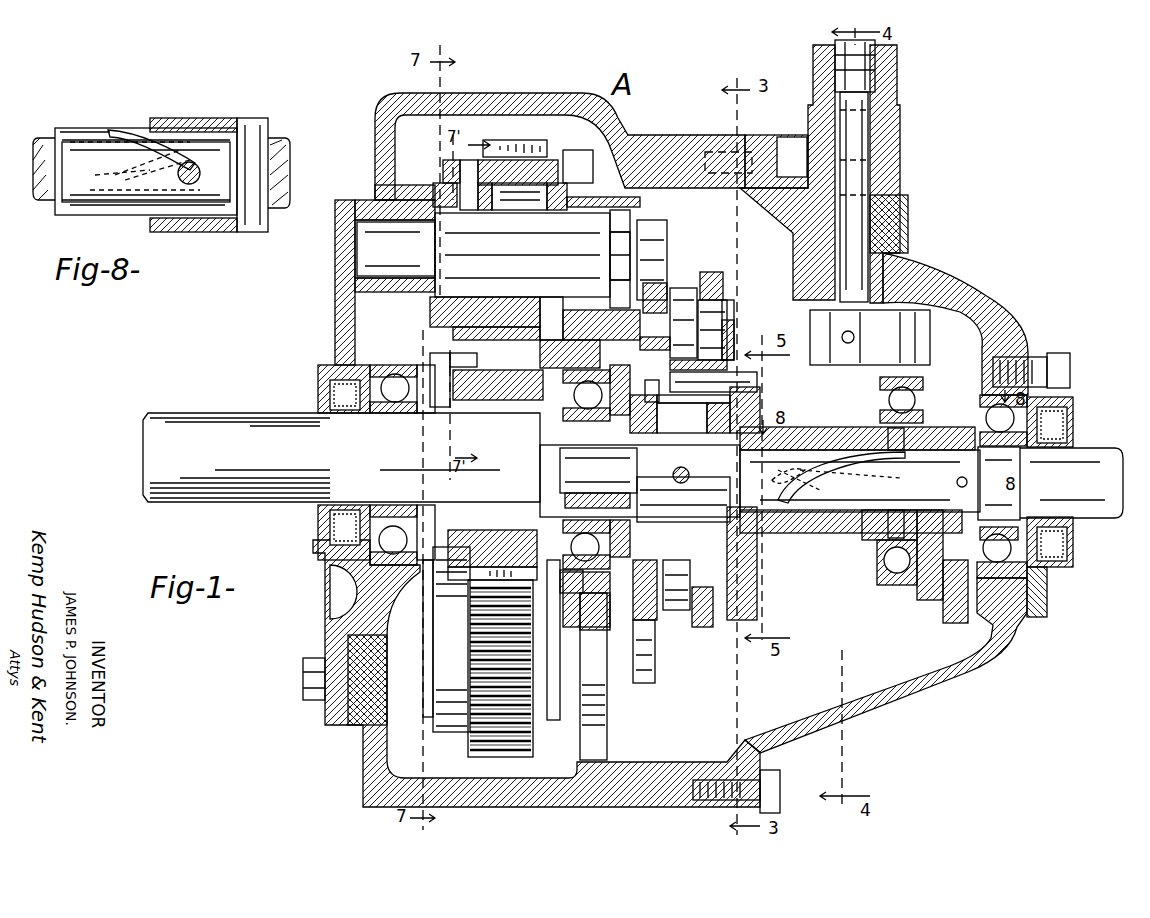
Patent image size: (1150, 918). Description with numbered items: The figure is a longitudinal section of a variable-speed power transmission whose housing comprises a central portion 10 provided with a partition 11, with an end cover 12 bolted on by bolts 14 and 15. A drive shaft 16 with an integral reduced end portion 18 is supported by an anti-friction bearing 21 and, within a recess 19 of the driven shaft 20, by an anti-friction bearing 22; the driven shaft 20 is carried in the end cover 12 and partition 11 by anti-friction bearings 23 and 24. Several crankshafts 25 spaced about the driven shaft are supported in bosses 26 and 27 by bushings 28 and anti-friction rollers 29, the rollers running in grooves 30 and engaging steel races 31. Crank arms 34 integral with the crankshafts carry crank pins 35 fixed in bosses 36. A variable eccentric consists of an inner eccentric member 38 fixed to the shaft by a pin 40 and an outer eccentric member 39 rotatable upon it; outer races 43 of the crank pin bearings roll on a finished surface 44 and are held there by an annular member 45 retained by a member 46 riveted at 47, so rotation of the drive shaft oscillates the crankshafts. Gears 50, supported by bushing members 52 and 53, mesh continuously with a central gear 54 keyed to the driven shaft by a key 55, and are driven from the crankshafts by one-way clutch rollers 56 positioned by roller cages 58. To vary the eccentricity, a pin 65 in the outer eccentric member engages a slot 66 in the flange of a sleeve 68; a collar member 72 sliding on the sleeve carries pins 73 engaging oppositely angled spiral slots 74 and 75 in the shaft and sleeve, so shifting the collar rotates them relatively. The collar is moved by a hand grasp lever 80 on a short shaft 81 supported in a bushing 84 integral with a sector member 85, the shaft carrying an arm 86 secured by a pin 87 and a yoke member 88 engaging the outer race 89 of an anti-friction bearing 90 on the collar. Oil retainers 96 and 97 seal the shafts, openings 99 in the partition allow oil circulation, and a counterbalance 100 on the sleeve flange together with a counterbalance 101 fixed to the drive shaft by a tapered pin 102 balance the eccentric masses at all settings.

In FIG. 1, the central portion 10 is at (510, 96).
In FIG. 1, the partition 11 is at (640, 196).
In FIG. 1, the end cover 12 is at (345, 262).
In FIG. 1, the bolt 14 is at (302, 688).
In FIG. 1, the bolt 15 is at (780, 778).
In FIG. 1, the drive shaft 16 is at (1100, 450).
In FIG. 8, the drive shaft 16 is at (46, 140).
In FIG. 1, the reduced end portion 18 is at (597, 468).
In FIG. 1, the recess 19 is at (538, 468).
In FIG. 1, the driven shaft 20 is at (268, 468).
In FIG. 1, the anti-friction bearing 21 is at (985, 402).
In FIG. 1, the anti-friction bearing 22 is at (578, 490).
In FIG. 1, the anti-friction bearing 23 is at (410, 388).
In FIG. 1, the anti-friction bearing 24 is at (578, 393).
In FIG. 1, the crankshaft 25 is at (522, 255).
In FIG. 1, the boss 26 is at (410, 190).
In FIG. 1, the boss 27 is at (570, 182).
In FIG. 1, the bushing 28 is at (405, 226).
In FIG. 1, the anti-friction roller 29 is at (610, 226).
In FIG. 1, the groove 30 is at (613, 255).
In FIG. 1, the steel race 31 is at (575, 206).
In FIG. 1, the crank arm 34 is at (667, 228).
In FIG. 1, the crank pin 35 is at (683, 323).
In FIG. 1, the boss 36 is at (668, 295).
In FIG. 1, the inner eccentric member 38 is at (680, 414).
In FIG. 1, the outer eccentric member 39 is at (693, 406).
In FIG. 1, the pin 40 is at (688, 472).
In FIG. 1, the outer race 43 is at (692, 300).
In FIG. 1, the finished surface 44 is at (740, 360).
In FIG. 1, the annular member 45 is at (722, 275).
In FIG. 1, the member 46 is at (727, 305).
In FIG. 1, the rivet 47 is at (735, 330).
In FIG. 1, the gear 50 is at (535, 141).
In FIG. 1, the bushing member 52 is at (445, 310).
In FIG. 1, the bushing member 53 is at (570, 332).
In FIG. 1, the central gear 54 is at (515, 400).
In FIG. 1, the key 55 is at (468, 410).
In FIG. 1, the roller 56 is at (505, 205).
In FIG. 1, the roller cage 58 is at (447, 215).
In FIG. 1, the pin 65 is at (758, 382).
In FIG. 1, the slot 66 is at (760, 405).
In FIG. 1, the sleeve 68 is at (810, 422).
In FIG. 8, the sleeve 68 is at (218, 145).
In FIG. 1, the collar member 72 is at (880, 536).
In FIG. 8, the collar member 72 is at (190, 120).
In FIG. 1, the pin 73 is at (940, 285).
In FIG. 8, the pin 73 is at (200, 175).
In FIG. 1, the spiral slot 74 is at (772, 480).
In FIG. 8, the spiral slot 74 is at (140, 177).
In FIG. 1, the spiral slot 75 is at (840, 470).
In FIG. 8, the spiral slot 75 is at (120, 130).
In FIG. 1, the hand grasp lever 80 is at (890, 80).
In FIG. 1, the short shaft 81 is at (905, 215).
In FIG. 1, the bushing 84 is at (890, 256).
In FIG. 1, the sector member 85 is at (900, 160).
In FIG. 1, the arm 86 is at (912, 337).
In FIG. 1, the pin 87 is at (847, 345).
In FIG. 1, the yoke member 88 is at (925, 386).
In FIG. 1, the outer race 89 is at (925, 370).
In FIG. 1, the anti-friction bearing 90 is at (880, 562).
In FIG. 1, the oil retainer 96 is at (1073, 420).
In FIG. 1, the oil retainer 97 is at (330, 392).
In FIG. 1, the opening 99 is at (607, 738).
In FIG. 1, the counterbalance 100 is at (755, 597).
In FIG. 1, the counterbalance 101 is at (945, 602).
In FIG. 8, the counterbalance 101 is at (258, 125).
In FIG. 1, the tapered pin 102 is at (968, 480).